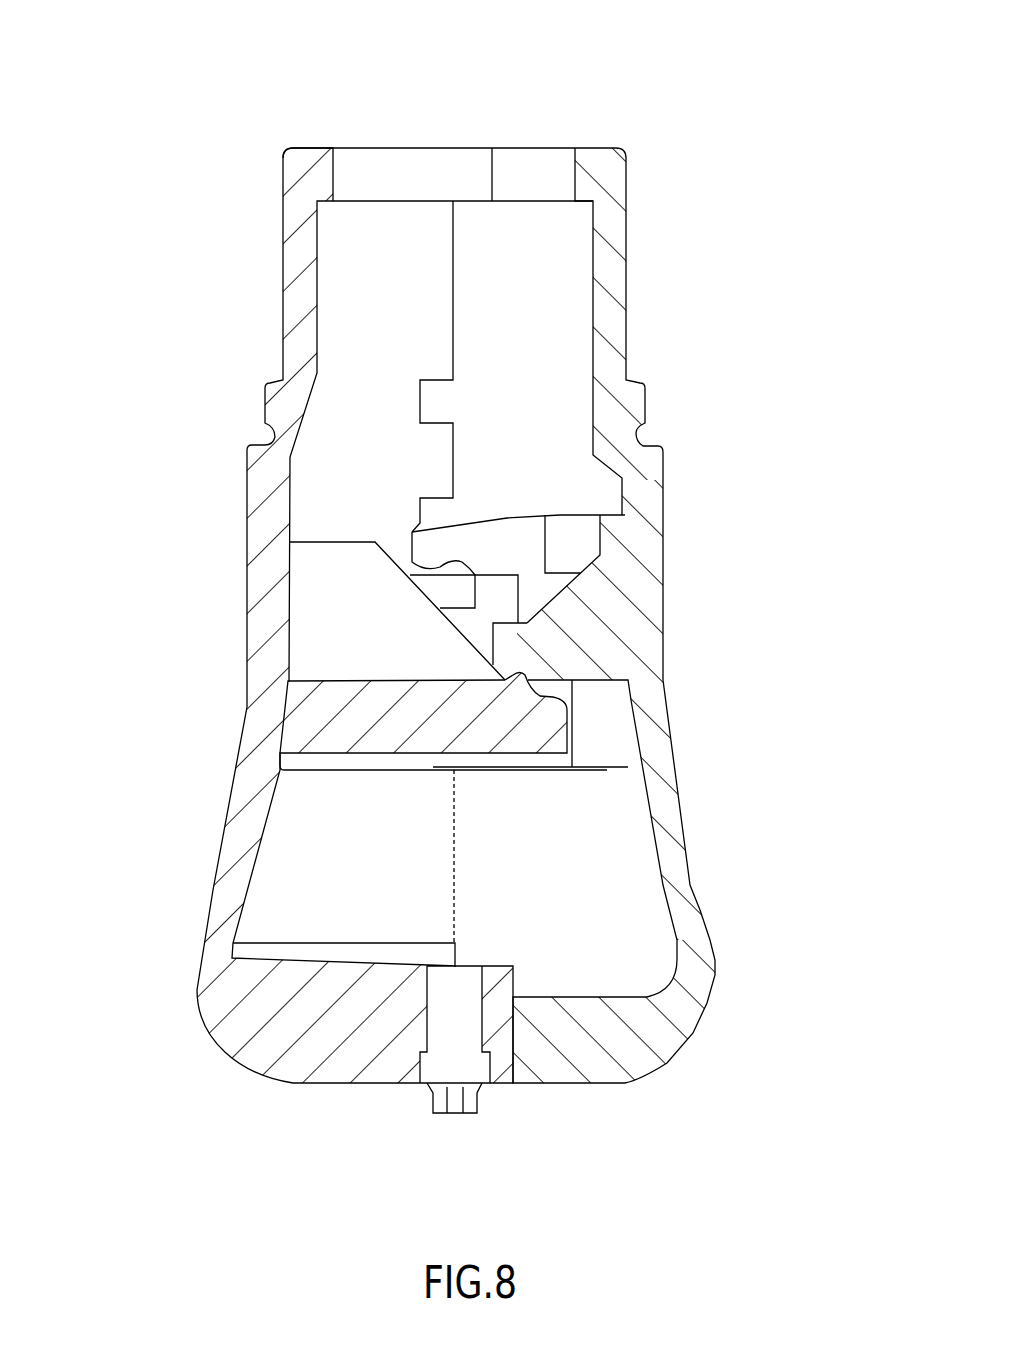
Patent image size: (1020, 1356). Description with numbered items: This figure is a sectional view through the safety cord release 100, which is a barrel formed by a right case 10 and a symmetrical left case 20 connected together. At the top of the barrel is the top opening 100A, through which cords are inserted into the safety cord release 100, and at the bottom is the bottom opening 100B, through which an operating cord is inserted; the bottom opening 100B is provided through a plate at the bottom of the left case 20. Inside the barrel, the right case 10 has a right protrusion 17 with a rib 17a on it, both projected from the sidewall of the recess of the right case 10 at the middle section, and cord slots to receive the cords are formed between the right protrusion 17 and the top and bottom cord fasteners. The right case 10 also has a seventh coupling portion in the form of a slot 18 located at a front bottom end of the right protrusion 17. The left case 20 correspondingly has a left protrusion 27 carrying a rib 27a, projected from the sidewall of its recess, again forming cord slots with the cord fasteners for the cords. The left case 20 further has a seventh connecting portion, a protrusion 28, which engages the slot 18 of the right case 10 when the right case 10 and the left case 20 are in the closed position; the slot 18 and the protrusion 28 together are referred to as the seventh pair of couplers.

The safety cord release 100 is at (692, 90).
The top opening 100A is at (410, 163).
The bottom opening 100B is at (455, 1070).
The right case 10 is at (639, 264).
The left case 20 is at (272, 265).
The right protrusion 17 is at (522, 633).
The rib 17a is at (578, 588).
The slot 18 is at (522, 671).
The left protrusion 27 is at (313, 722).
The rib 27a is at (352, 612).
The protrusion 28 is at (517, 685).